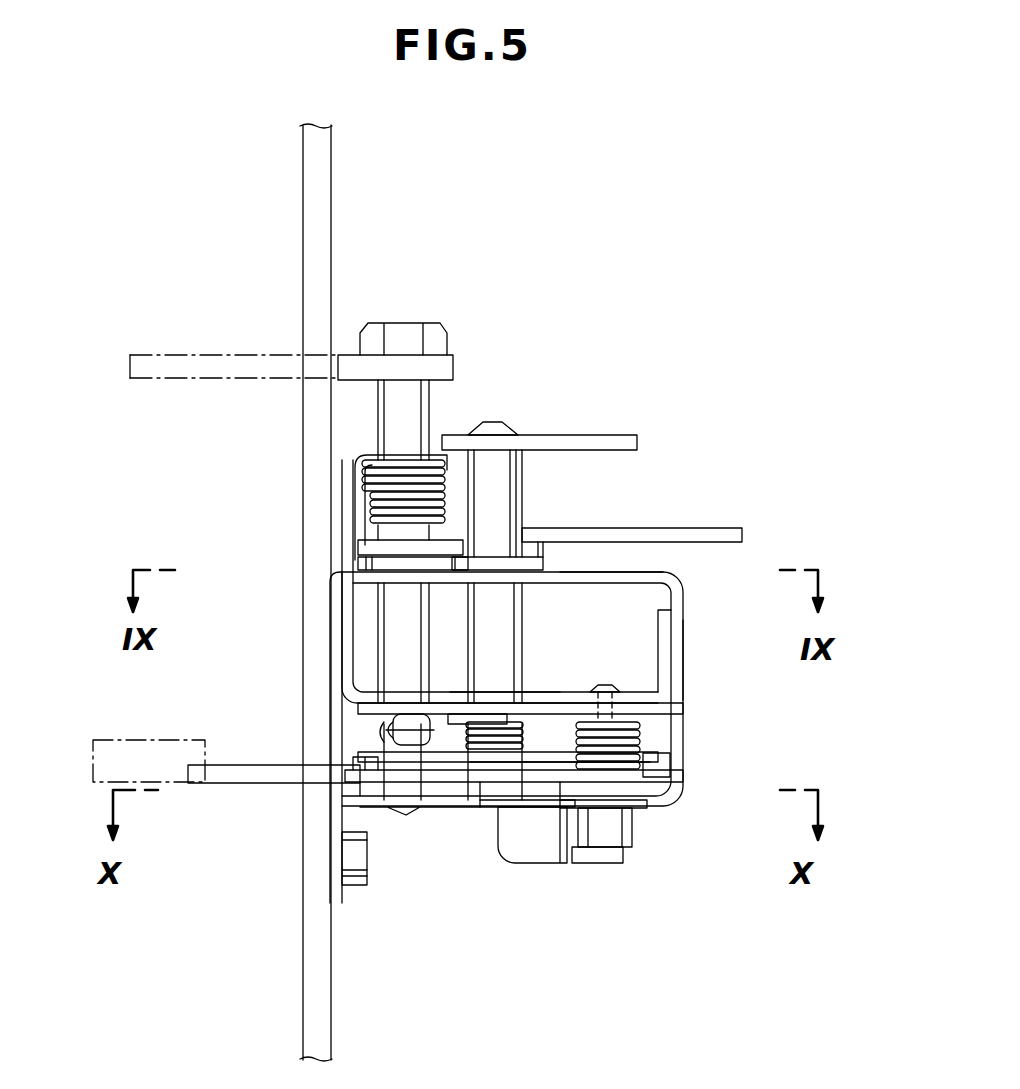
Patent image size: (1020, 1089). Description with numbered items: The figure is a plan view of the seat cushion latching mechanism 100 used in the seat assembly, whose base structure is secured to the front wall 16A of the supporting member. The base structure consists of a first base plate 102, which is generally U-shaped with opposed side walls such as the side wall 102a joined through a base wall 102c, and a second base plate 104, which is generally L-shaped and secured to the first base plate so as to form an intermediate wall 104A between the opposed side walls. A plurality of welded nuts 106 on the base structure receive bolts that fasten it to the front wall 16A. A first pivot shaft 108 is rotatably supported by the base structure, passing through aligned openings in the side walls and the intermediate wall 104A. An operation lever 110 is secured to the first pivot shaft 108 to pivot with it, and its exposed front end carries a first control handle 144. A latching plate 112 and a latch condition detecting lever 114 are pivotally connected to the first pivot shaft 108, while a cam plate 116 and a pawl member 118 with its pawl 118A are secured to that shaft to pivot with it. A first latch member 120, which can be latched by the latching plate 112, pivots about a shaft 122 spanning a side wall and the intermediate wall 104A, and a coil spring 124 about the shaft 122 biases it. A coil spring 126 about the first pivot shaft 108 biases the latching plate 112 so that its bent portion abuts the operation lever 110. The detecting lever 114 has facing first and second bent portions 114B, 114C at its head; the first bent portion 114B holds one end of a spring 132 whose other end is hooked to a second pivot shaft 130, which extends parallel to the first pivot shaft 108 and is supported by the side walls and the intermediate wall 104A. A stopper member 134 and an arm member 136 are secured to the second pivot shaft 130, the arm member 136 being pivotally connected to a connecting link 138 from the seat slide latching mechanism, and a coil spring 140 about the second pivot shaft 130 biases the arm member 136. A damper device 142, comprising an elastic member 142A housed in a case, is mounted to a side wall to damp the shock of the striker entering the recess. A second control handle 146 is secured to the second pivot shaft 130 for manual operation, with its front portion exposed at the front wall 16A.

The front wall 16A is at (303, 235).
The seat cushion latching mechanism 100 is at (647, 358).
The first base plate 102 is at (684, 603).
The side wall 102a is at (640, 572).
The base wall 102c is at (683, 650).
The second base plate 104 is at (326, 572).
The intermediate wall 104A is at (538, 692).
The welded nut 106 is at (357, 491).
The first pivot shaft 108 is at (490, 420).
The operation lever 110 is at (245, 783).
The latching plate 112 is at (459, 712).
The latch condition detecting lever 114 is at (470, 800).
The first bent portion 114B is at (409, 718).
The second bent portion 114C is at (428, 805).
The cam plate 116 is at (568, 435).
The pawl member 118 is at (495, 560).
The pawl 118A is at (573, 553).
The first latch member 120 is at (680, 703).
The shaft 122 is at (605, 685).
The coil spring 124 is at (640, 735).
The coil spring 126 is at (522, 770).
The second pivot shaft 130 is at (402, 329).
The spring 132 is at (385, 725).
The stopper member 134 is at (365, 760).
The arm member 136 is at (363, 545).
The connecting link 138 is at (711, 528).
The coil spring 140 is at (400, 464).
The damper device 142 is at (560, 864).
The elastic member 142A is at (632, 820).
The first control handle 144 is at (148, 740).
The second control handle 146 is at (192, 353).